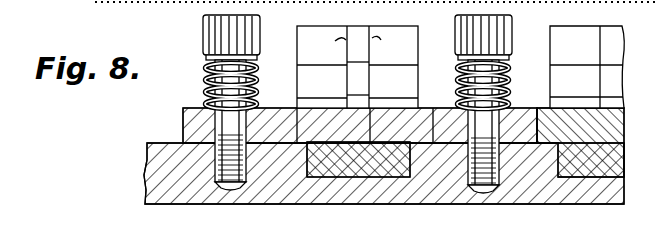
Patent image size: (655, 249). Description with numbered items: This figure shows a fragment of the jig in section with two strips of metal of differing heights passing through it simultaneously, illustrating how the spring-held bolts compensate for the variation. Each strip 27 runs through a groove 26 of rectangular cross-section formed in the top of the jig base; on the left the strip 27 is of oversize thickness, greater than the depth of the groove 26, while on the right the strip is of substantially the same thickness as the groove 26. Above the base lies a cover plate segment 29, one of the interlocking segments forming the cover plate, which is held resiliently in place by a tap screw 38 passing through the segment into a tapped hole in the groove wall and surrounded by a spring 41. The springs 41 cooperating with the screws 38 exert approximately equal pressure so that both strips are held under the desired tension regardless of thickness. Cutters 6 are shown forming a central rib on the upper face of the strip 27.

The cutters 6 is at (347, 41).
The groove 26 is at (400, 155).
The metal strip 27 is at (340, 160).
The cover plate segment 29 is at (183, 119).
The tap screw 38 is at (203, 38).
The spring 41 is at (206, 72).